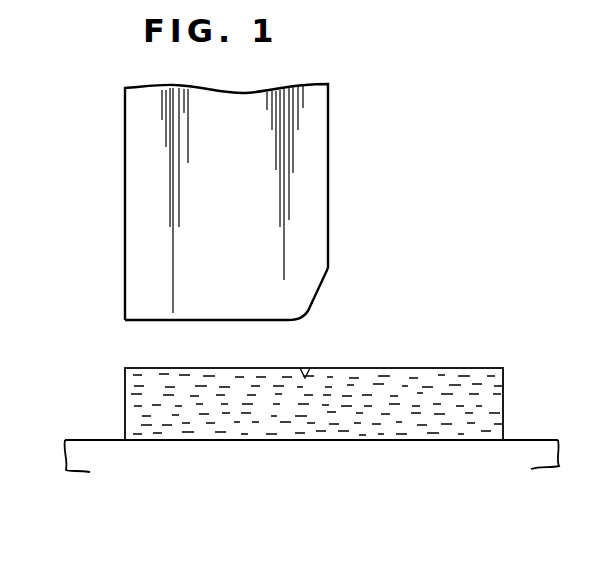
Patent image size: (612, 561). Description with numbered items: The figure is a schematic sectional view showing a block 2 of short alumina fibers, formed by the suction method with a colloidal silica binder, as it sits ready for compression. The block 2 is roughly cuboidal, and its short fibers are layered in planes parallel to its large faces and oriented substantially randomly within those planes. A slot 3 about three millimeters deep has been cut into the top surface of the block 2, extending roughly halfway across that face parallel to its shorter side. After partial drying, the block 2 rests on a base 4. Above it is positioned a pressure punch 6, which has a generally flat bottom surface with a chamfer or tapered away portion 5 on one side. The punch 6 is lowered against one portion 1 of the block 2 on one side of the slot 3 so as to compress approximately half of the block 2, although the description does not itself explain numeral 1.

The workpiece body 1 is at (415, 372).
The workpiece edge 2 is at (510, 398).
The surface notch 3 is at (305, 375).
The base 4 is at (80, 440).
The chamfered edge 5 is at (317, 287).
The block 6 is at (328, 167).